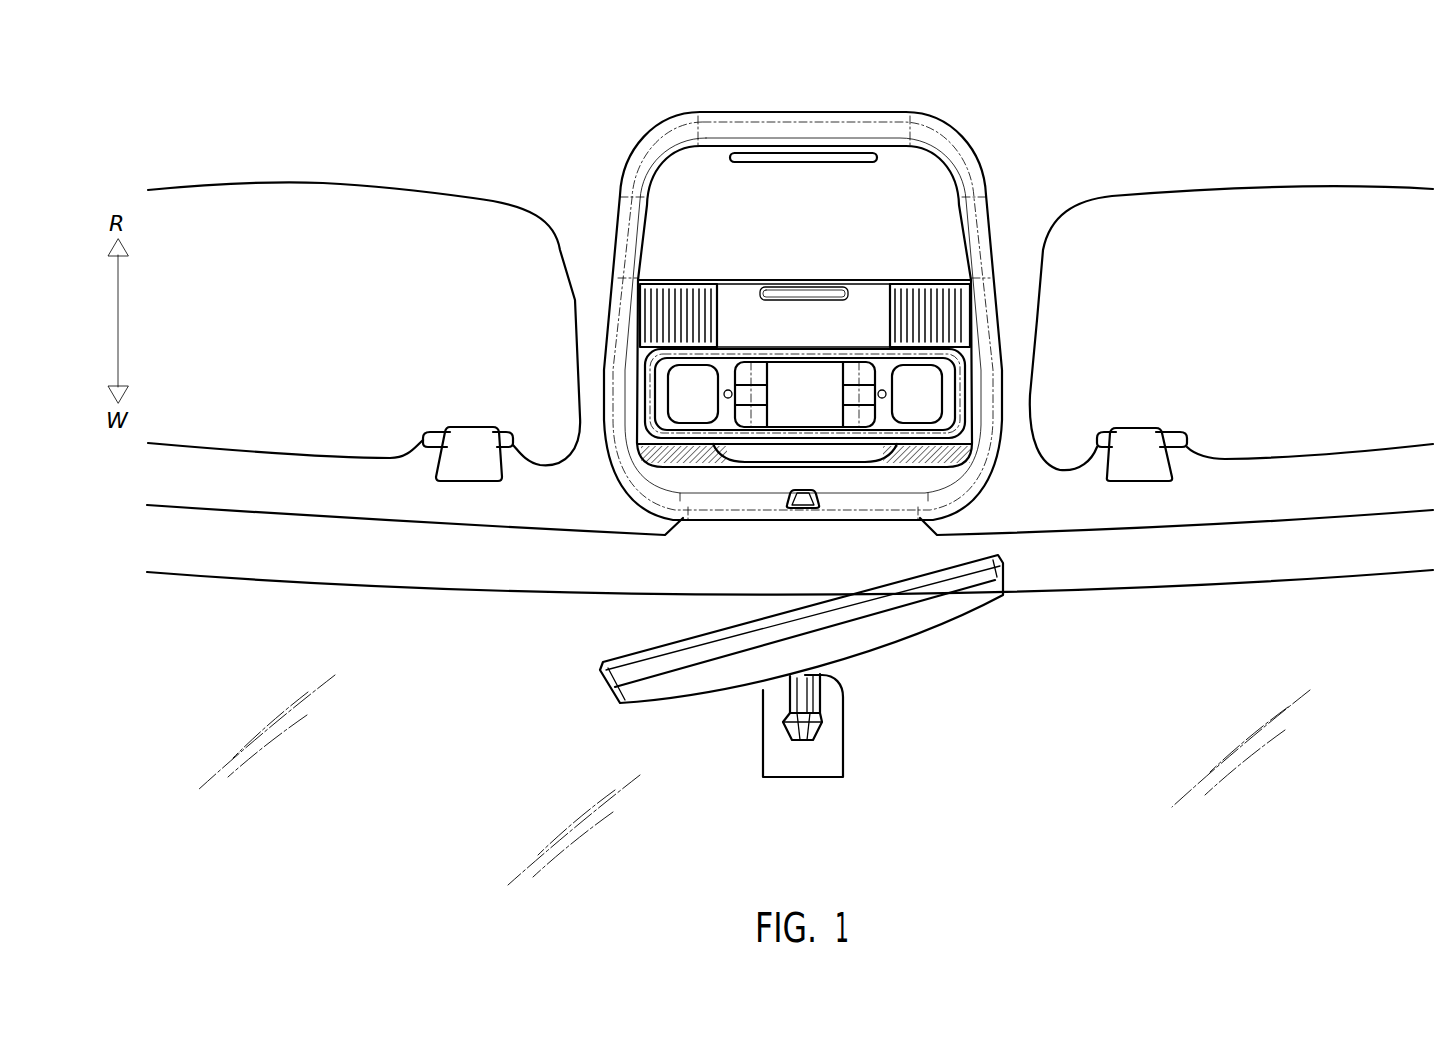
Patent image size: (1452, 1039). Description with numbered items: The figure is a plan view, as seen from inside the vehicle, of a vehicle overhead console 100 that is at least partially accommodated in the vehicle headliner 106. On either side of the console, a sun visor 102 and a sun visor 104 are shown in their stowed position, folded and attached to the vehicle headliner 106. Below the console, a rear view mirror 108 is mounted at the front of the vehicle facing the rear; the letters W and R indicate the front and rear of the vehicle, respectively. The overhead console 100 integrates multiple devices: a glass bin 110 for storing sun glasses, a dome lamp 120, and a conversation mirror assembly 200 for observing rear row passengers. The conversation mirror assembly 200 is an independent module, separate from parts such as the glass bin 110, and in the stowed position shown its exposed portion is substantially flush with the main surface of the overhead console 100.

The overhead console 100 is at (830, 302).
The sun visor 102 is at (1135, 211).
The sun visor 104 is at (467, 212).
The vehicle headliner 106 is at (1155, 84).
The rear view mirror 108 is at (927, 611).
The glass bin 110 is at (827, 223).
The dome lamp 120 is at (823, 398).
The conversation mirror assembly 200 is at (823, 333).